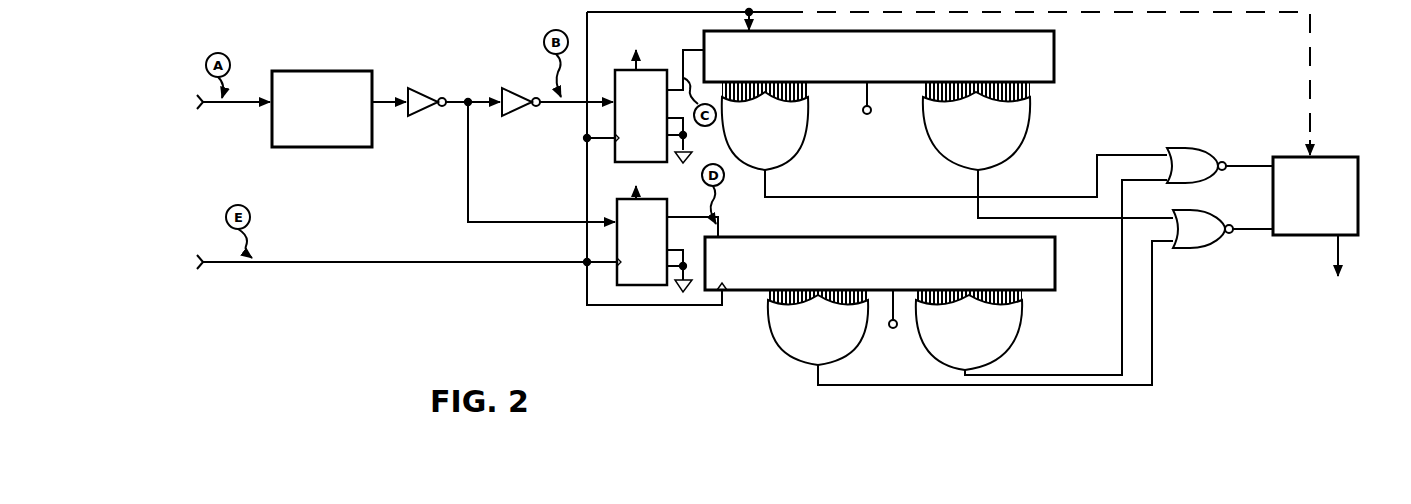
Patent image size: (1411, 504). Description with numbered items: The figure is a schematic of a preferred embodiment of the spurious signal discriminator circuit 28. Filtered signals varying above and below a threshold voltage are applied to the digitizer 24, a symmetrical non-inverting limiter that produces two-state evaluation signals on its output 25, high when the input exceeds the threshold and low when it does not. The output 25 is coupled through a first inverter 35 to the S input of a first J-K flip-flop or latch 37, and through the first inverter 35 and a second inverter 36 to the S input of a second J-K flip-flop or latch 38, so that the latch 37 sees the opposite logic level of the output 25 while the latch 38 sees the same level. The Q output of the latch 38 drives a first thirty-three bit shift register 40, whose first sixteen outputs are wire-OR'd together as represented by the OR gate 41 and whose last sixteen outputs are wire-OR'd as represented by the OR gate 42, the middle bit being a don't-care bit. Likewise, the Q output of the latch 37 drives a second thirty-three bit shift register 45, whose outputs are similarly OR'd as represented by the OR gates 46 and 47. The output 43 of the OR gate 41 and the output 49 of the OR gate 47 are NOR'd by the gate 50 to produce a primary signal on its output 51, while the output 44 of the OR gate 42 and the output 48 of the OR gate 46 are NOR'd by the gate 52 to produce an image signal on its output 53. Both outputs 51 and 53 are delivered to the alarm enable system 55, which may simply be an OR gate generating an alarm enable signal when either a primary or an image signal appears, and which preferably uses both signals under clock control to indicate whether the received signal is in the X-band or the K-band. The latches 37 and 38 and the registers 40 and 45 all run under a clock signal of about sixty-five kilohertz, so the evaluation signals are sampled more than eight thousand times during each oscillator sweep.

The digitizer 24 is at (311, 147).
The output 25 is at (388, 98).
The spurious signal discriminator circuit 28 is at (528, 308).
The first inverter 35 is at (420, 122).
The second inverter 36 is at (512, 115).
The first J-K flip-flop or latch 37 is at (622, 292).
The second J-K flip-flop or latch 38 is at (650, 62).
The first 33 bit shift register 40 is at (1062, 44).
The OR gate 41 is at (808, 118).
The OR gate 42 is at (1020, 118).
The output of OR gate 41 43 is at (815, 195).
The output of OR gate 42 44 is at (983, 180).
The second 33 bit shift register 45 is at (1060, 262).
The OR gate 46 is at (852, 338).
The OR gate 47 is at (1015, 322).
The output of OR gate 46 48 is at (888, 385).
The output of OR gate 47 49 is at (1047, 376).
The NOR gate 50 is at (1193, 147).
The output 51 is at (1258, 169).
The NOR gate 52 is at (1197, 249).
The output 53 is at (1256, 227).
The alarm enable system 55 is at (1346, 155).